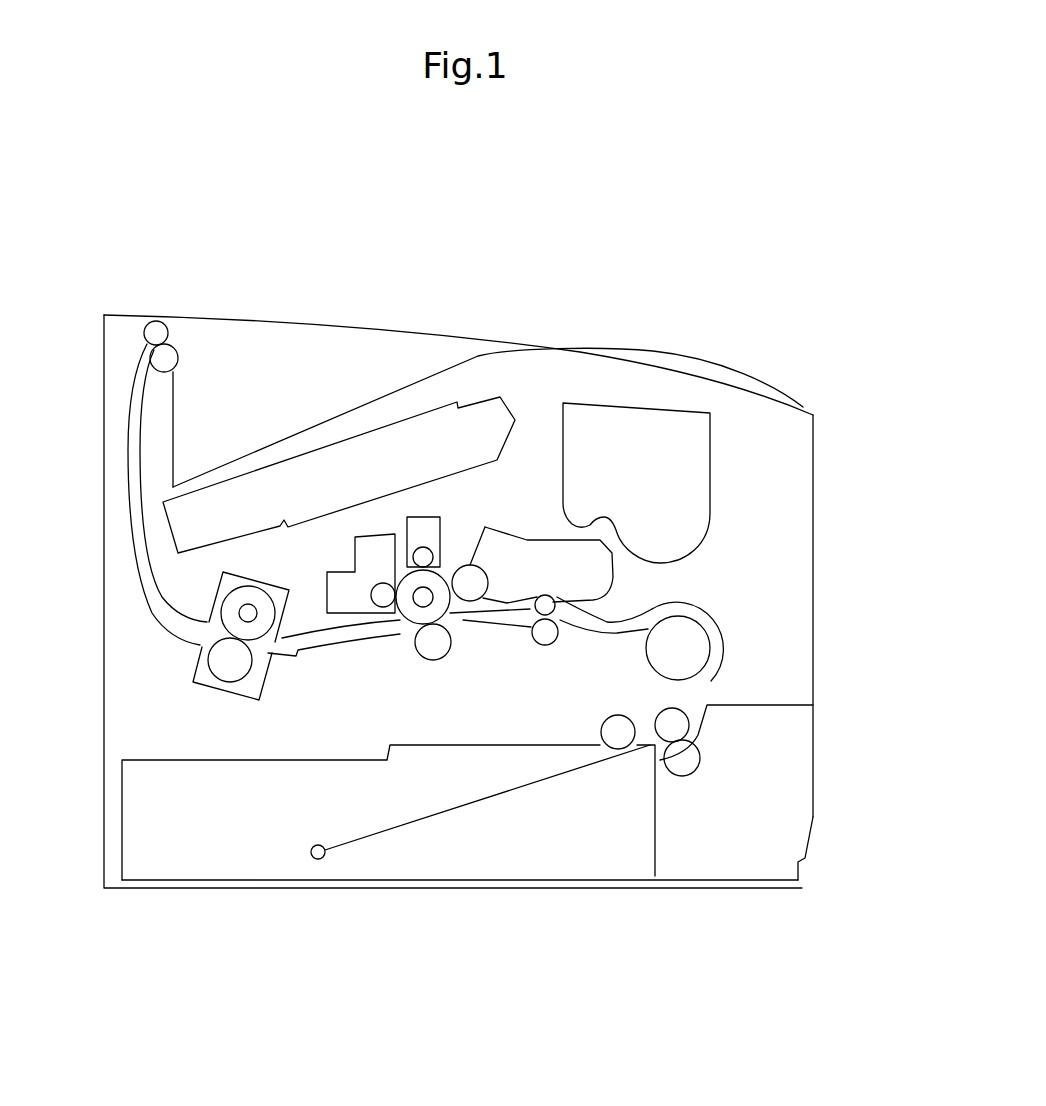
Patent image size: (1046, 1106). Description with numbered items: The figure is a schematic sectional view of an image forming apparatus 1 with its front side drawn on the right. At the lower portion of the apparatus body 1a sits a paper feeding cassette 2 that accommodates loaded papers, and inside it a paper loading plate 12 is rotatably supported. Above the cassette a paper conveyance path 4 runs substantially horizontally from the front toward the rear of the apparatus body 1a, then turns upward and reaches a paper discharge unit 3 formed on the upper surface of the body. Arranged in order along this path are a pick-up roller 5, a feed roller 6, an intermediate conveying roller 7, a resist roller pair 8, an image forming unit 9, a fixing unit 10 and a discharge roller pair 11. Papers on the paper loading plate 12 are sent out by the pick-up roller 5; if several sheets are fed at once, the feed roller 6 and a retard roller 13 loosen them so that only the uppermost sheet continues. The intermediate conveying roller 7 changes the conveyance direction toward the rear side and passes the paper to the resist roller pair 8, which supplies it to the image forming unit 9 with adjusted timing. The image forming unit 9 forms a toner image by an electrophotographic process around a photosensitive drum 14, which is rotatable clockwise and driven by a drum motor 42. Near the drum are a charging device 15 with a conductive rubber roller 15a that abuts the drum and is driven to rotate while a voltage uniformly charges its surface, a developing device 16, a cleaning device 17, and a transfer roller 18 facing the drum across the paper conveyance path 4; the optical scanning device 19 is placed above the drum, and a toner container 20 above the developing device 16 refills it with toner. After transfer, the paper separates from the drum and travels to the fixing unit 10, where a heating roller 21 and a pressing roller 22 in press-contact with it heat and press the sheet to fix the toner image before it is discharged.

The image forming apparatus 1 is at (672, 327).
The apparatus body 1a is at (814, 538).
The paper feeding cassette 2 is at (817, 797).
The paper discharge unit 3 is at (285, 437).
The optical scanning device 19 is at (388, 470).
The discharge roller pair 11 is at (170, 339).
The paper conveyance path 4 is at (133, 550).
The fixing unit 10 is at (188, 652).
The heating roller 21 is at (247, 612).
The pressing roller 22 is at (232, 662).
The cleaning device 17 is at (358, 593).
The charging device 15 is at (430, 522).
The conductive rubber roller 15a is at (425, 558).
The photosensitive drum 14 is at (438, 603).
The drum motor 42 is at (420, 600).
The transfer roller 18 is at (435, 641).
The image forming unit 9 is at (425, 660).
The developing device 16 is at (525, 565).
The resist roller pair 8 is at (569, 633).
The intermediate conveying roller 7 is at (678, 648).
The toner container 20 is at (660, 480).
The feed roller 6 is at (672, 724).
The retard roller 13 is at (682, 758).
The pick-up roller 5 is at (618, 745).
The paper loading plate 12 is at (452, 810).